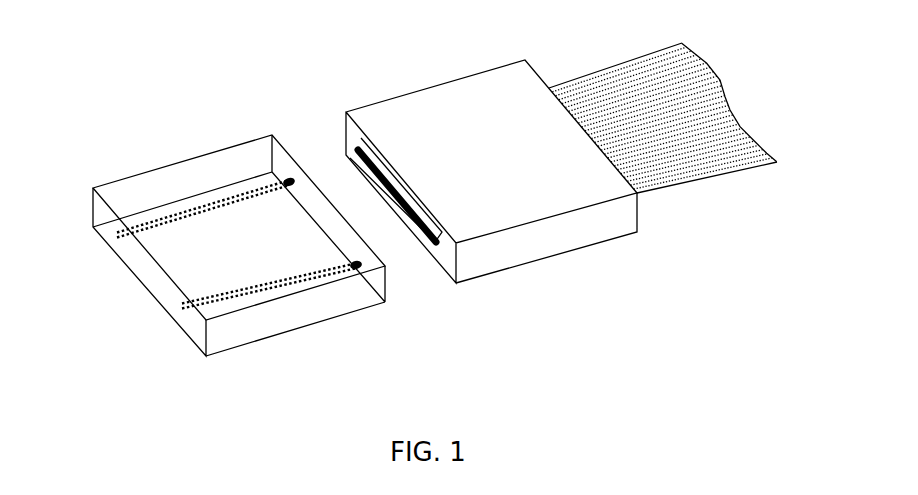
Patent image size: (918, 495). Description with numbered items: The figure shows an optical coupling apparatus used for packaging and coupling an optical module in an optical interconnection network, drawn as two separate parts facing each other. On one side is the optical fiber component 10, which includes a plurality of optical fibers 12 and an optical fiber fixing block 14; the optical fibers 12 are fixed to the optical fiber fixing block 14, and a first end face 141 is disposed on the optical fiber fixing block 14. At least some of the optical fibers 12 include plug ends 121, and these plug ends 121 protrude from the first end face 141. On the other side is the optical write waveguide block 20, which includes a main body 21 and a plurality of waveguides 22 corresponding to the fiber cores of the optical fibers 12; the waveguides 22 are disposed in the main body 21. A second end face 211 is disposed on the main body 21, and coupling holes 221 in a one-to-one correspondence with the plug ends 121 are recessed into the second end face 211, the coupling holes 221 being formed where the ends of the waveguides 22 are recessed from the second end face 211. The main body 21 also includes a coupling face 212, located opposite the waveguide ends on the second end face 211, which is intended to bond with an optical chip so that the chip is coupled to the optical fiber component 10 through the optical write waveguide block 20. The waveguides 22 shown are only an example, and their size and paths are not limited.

The optical fiber component 10 is at (470, 65).
The optical fibers 12 is at (638, 178).
The plug ends 121 is at (433, 250).
The optical fiber fixing block 14 is at (555, 205).
The first end face 141 is at (352, 140).
The optical write waveguide block 20 is at (180, 143).
The main body 21 is at (235, 157).
The second end face 211 is at (298, 160).
The coupling face 212 is at (162, 290).
The waveguides 22 is at (310, 278).
The coupling holes 221 is at (374, 253).